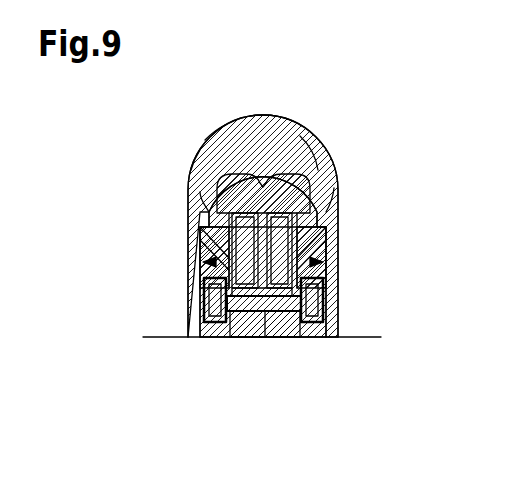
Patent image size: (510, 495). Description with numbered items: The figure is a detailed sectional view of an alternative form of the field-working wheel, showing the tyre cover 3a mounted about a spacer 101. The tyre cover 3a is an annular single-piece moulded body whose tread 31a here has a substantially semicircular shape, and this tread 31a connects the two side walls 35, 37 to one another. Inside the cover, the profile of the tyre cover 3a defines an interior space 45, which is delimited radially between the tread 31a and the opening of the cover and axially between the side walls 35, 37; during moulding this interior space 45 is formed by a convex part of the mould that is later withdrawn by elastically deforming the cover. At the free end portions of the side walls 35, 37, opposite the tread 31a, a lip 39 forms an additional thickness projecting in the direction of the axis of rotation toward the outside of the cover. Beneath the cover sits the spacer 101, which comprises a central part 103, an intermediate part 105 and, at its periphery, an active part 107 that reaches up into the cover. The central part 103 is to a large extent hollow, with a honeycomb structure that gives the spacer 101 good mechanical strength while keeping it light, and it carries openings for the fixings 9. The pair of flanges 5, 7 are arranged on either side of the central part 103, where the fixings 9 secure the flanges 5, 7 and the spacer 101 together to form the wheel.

The tyre cover 3a is at (248, 112).
The tread 31a is at (268, 112).
The interior space 45 is at (238, 160).
The active part 107 is at (240, 188).
The side wall 37 is at (192, 178).
The side wall 35 is at (334, 186).
The spacer 101 is at (264, 184).
The intermediate part 105 is at (307, 186).
The lip 39 is at (197, 252).
The flange 7 is at (198, 262).
The flange 5 is at (330, 261).
The central part 103 is at (258, 325).
The fixings 9 is at (278, 323).